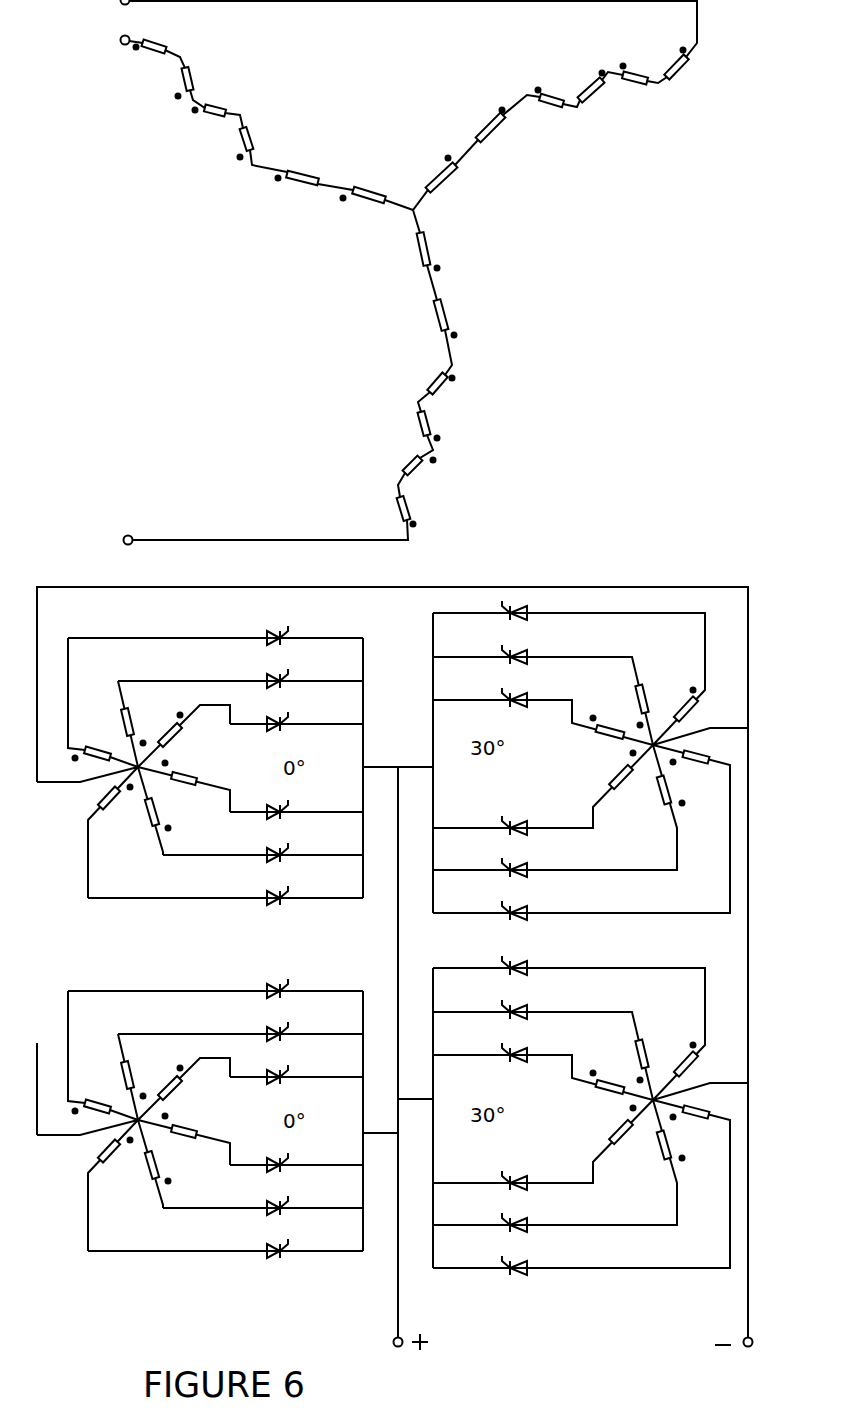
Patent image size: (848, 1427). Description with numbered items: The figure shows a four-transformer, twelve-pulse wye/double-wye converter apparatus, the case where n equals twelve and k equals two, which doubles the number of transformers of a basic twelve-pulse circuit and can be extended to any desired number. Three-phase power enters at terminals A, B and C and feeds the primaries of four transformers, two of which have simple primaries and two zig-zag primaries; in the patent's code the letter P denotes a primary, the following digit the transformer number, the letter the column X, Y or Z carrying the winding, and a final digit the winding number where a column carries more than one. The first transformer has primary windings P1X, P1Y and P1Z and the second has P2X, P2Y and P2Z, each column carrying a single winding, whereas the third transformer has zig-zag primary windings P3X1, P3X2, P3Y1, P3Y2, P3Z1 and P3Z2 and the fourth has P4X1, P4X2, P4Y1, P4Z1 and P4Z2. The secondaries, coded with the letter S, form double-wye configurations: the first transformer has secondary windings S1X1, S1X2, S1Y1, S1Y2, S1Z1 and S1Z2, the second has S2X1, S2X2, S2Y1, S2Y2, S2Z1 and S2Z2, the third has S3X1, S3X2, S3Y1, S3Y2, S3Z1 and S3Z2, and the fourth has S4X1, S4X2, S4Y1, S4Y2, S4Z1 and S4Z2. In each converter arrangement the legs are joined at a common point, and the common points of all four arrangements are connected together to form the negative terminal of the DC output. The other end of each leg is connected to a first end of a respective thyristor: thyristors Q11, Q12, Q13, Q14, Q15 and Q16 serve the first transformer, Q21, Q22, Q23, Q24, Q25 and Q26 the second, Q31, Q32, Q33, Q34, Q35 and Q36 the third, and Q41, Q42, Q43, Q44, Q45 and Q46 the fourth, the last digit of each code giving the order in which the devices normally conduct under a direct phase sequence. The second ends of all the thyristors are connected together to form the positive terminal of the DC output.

The AC input terminal A is at (102, 6).
The AC input terminal B is at (107, 540).
The AC input terminal C is at (102, 40).
The primary winding P1X is at (456, 180).
The primary winding P1Y is at (445, 251).
The primary winding P1Z is at (370, 183).
The primary winding P2X is at (474, 125).
The primary winding P2Y is at (463, 318).
The primary winding P2Z is at (289, 189).
The primary winding P3X1 is at (575, 82).
The primary winding P3X2 is at (414, 378).
The primary winding P3Y1 is at (303, 253).
The primary winding P3Y2 is at (215, 143).
The primary winding P3Z1 is at (228, 100).
The primary winding P3Z2 is at (554, 110).
The primary winding P4X1 is at (658, 59).
The primary winding P4X2 is at (391, 460).
The primary winding P4Y1 is at (431, 511).
The primary winding P4Z1 is at (168, 35).
The primary winding P4Z2 is at (636, 88).
The secondary winding S1X1 is at (193, 732).
The secondary winding S1X2 is at (88, 801).
The secondary winding S1Y1 is at (177, 814).
The secondary winding S1Y2 is at (148, 718).
The secondary winding S1Z1 is at (98, 744).
The secondary winding S1Z2 is at (206, 774).
The secondary winding S2X1 is at (196, 1088).
The secondary winding S2X2 is at (85, 1154).
The secondary winding S2Y1 is at (176, 1167).
The secondary winding S2Y2 is at (149, 1071).
The secondary winding S2Z1 is at (78, 1118).
The secondary winding S2Z2 is at (206, 1126).
The secondary winding S3X1 is at (582, 735).
The secondary winding S3X2 is at (695, 770).
The secondary winding S3Y1 is at (651, 802).
The secondary winding S3Y2 is at (613, 705).
The secondary winding S3Z1 is at (709, 709).
The secondary winding S3Z2 is at (590, 773).
The secondary winding S4X1 is at (583, 1091).
The secondary winding S4X2 is at (696, 1126).
The secondary winding S4Y1 is at (648, 1158).
The secondary winding S4Y2 is at (612, 1059).
The secondary winding S4Z1 is at (709, 1064).
The secondary winding S4Z2 is at (592, 1126).
The thyristor Q11 is at (304, 715).
The thyristor Q12 is at (304, 803).
The thyristor Q13 is at (304, 846).
The thyristor Q14 is at (304, 889).
The thyristor Q15 is at (304, 629).
The thyristor Q16 is at (304, 672).
The thyristor Q21 is at (304, 1068).
The thyristor Q22 is at (304, 1156).
The thyristor Q23 is at (304, 1199).
The thyristor Q24 is at (304, 1242).
The thyristor Q25 is at (304, 982).
The thyristor Q26 is at (304, 1025).
The thyristor Q31 is at (487, 692).
The thyristor Q32 is at (487, 819).
The thyristor Q33 is at (487, 861).
The thyristor Q34 is at (487, 906).
The thyristor Q35 is at (535, 624).
The thyristor Q36 is at (487, 649).
The thyristor Q41 is at (487, 1046).
The thyristor Q42 is at (487, 1173).
The thyristor Q43 is at (487, 1215).
The thyristor Q44 is at (487, 1261).
The thyristor Q45 is at (487, 958).
The thyristor Q46 is at (487, 1003).